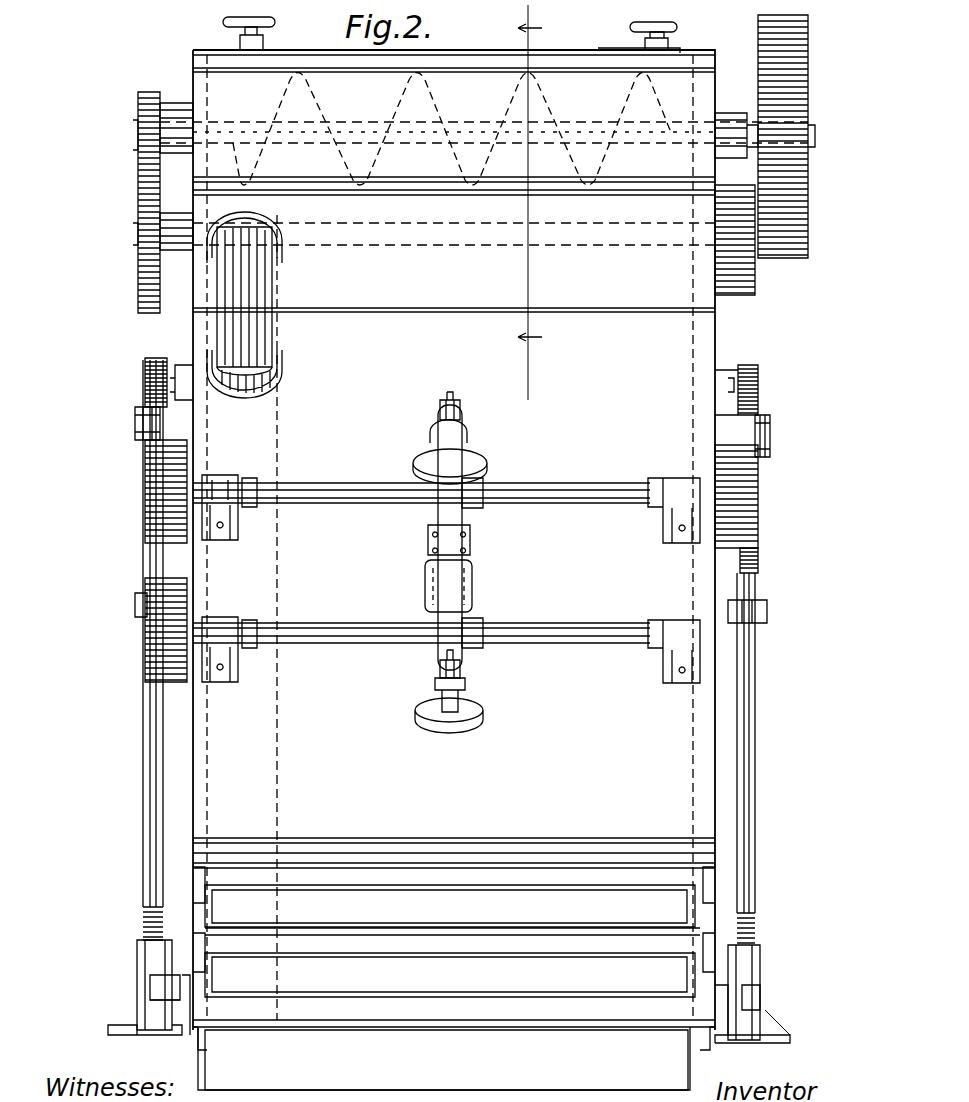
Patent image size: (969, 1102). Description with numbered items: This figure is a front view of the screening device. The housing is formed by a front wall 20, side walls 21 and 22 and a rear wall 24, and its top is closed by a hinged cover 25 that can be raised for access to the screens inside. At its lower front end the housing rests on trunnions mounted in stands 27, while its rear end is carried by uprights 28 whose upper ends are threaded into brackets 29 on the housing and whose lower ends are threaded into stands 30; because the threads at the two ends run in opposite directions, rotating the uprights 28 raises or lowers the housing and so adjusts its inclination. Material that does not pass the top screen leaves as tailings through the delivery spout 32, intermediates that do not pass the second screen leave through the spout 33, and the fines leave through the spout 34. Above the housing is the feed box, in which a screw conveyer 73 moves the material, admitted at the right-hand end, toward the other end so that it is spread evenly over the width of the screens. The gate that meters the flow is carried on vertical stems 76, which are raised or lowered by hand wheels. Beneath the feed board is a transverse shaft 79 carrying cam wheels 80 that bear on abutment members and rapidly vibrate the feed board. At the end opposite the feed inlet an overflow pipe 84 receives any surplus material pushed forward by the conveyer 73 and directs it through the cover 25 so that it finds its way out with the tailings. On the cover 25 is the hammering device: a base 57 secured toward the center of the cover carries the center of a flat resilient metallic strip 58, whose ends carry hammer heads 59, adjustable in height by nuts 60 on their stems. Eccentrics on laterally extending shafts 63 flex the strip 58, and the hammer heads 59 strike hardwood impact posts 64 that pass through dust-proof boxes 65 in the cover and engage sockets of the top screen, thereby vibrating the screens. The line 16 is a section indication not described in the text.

The section line 16 is at (529, 202).
The front wall 20 is at (454, 572).
The side wall 21 is at (713, 752).
The side wall 22 is at (228, 21).
The rear wall 24 is at (810, 136).
The hinged cover 25 is at (450, 615).
The stand 27 is at (145, 998).
The upright 28 is at (759, 386).
The bracket 29 is at (136, 430).
The stand 30 is at (760, 955).
The delivery spout 32 is at (450, 906).
The delivery spout 33 is at (450, 975).
The delivery spout 34 is at (446, 1060).
The base 57 is at (472, 568).
The resilient metallic strip 58 is at (438, 520).
The hammer head 59 is at (462, 680).
The nut 60 is at (461, 412).
The shaft 63 is at (556, 487).
The impact post 64 is at (440, 703).
The box 65 is at (477, 455).
The screw conveyer 73 is at (435, 94).
The vertical stem 76 is at (533, 14).
The transverse shaft 79 is at (575, 248).
The cam wheel 80 is at (220, 124).
The overflow pipe 84 is at (244, 305).